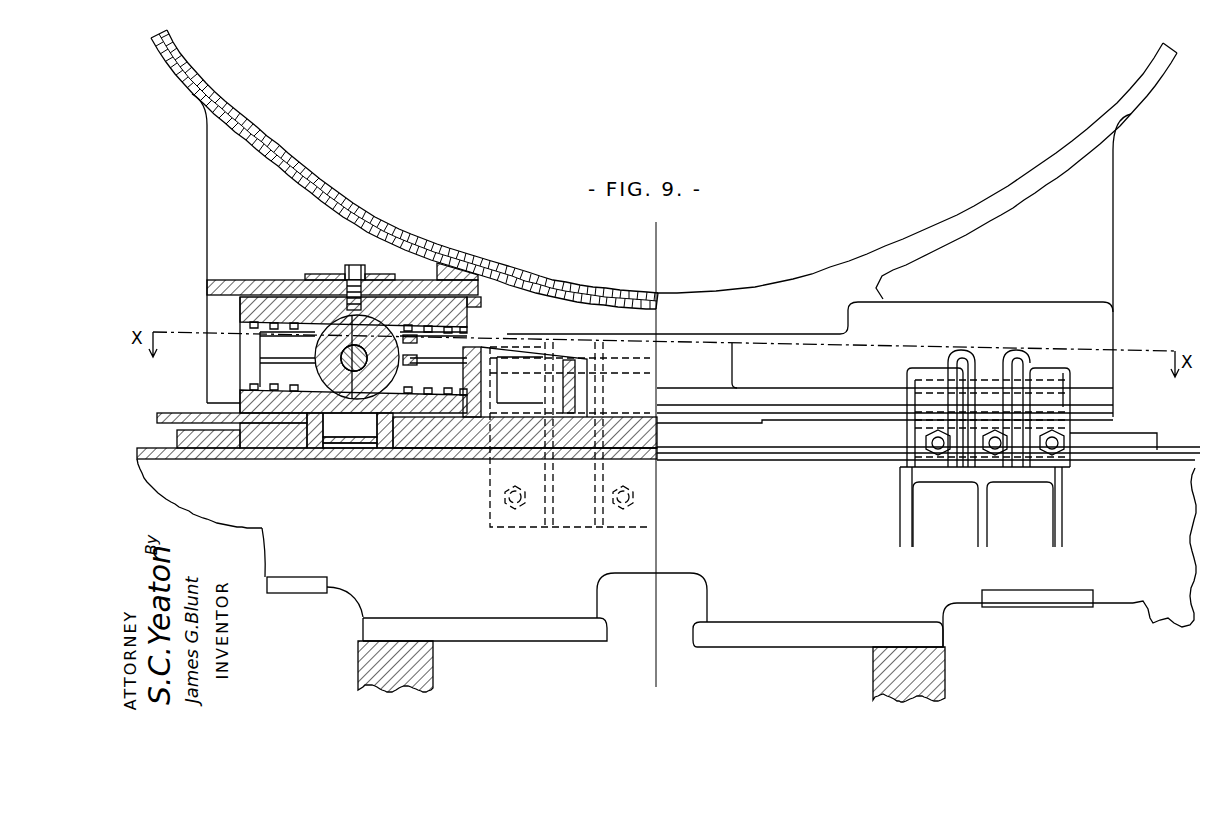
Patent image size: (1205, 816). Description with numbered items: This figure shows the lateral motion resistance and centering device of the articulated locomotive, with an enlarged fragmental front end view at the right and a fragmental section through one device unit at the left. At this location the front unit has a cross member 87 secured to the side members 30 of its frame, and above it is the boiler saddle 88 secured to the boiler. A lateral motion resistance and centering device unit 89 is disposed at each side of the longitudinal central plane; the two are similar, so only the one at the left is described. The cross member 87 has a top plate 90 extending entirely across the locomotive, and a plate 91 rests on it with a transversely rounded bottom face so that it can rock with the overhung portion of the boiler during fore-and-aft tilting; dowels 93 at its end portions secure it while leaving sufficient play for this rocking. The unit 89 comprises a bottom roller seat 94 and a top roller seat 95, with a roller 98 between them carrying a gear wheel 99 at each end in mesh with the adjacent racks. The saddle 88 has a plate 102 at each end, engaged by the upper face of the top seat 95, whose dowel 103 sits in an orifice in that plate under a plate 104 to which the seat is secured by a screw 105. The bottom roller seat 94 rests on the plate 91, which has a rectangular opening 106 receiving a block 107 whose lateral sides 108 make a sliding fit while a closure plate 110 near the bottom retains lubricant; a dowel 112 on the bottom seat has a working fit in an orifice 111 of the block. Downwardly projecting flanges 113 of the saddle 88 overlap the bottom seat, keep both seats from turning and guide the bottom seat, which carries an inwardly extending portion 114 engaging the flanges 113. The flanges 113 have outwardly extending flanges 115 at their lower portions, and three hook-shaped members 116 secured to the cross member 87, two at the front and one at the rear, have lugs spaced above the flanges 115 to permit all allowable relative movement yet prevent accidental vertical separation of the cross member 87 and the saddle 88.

The side members 30 is at (358, 660).
The cross member 87 is at (793, 613).
The boiler saddle 88 is at (840, 278).
The lateral motion resistance and centering device unit 89 is at (251, 260).
The top wall or plate 90 is at (300, 460).
The plate 91 is at (170, 413).
The dowels 93 is at (228, 462).
The bottom roller seat 94 is at (247, 390).
The top roller seat 95 is at (251, 307).
The roller 98 is at (316, 352).
The gear wheel 99 is at (410, 342).
The wall or plate 102 is at (455, 278).
The dowel 103 is at (381, 280).
The plate 104 is at (327, 275).
The screw 105 is at (363, 258).
The rectangular opening 106 is at (157, 419).
The block 107 is at (268, 448).
The lateral sides 108 is at (390, 437).
The closure plate 110 is at (345, 448).
The orifice 111 is at (417, 452).
The dowel 112 is at (340, 441).
The downwardly projecting flanges 113 is at (207, 320).
The inwardly extending portion 114 is at (575, 367).
The outwardly extending flanges 115 is at (827, 397).
The hook-shaped members 116 is at (518, 528).